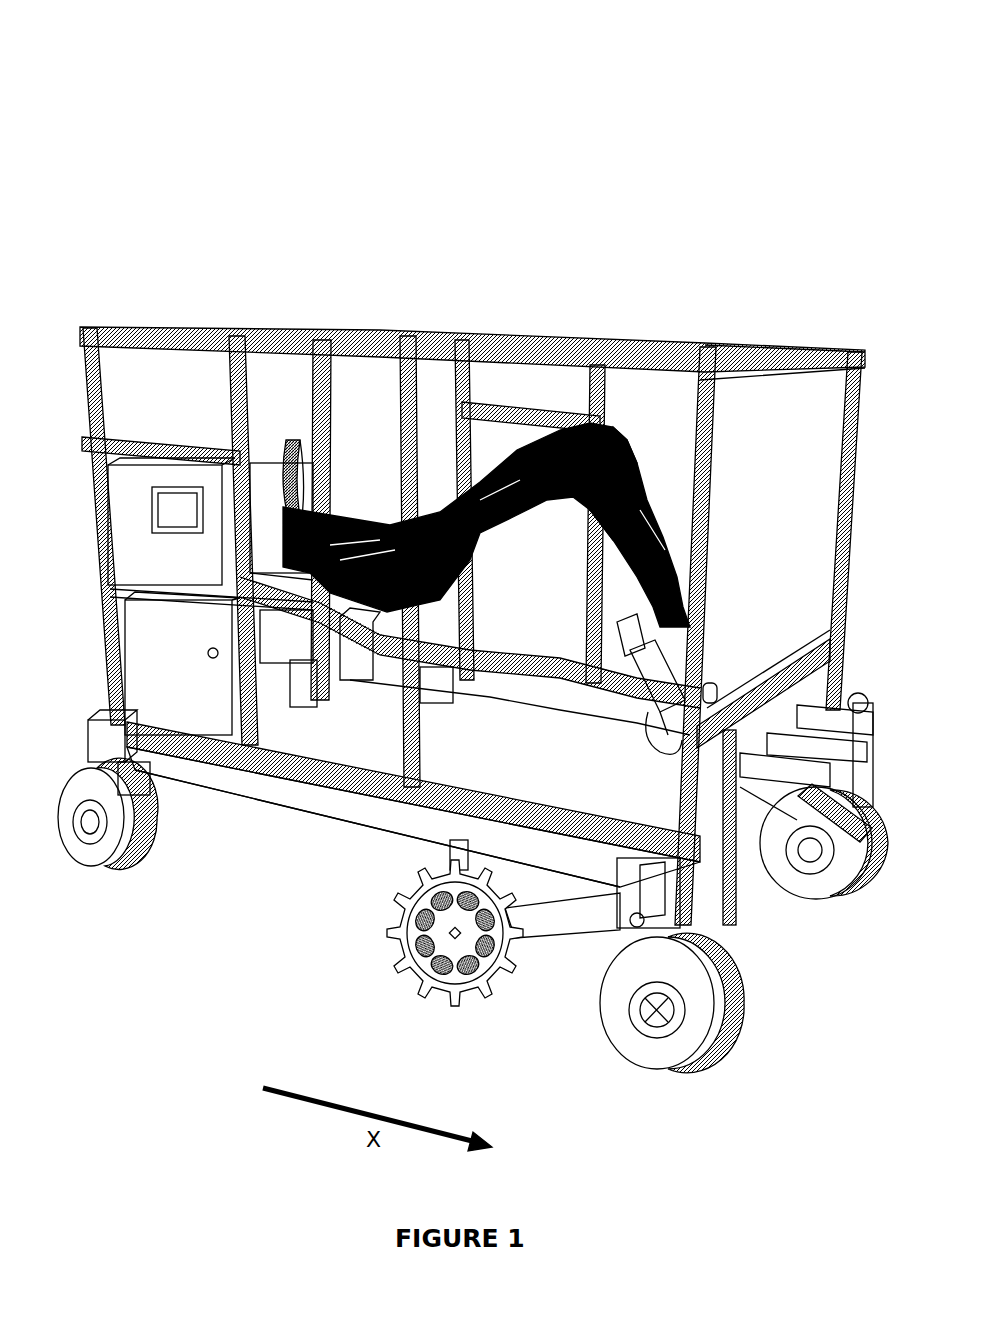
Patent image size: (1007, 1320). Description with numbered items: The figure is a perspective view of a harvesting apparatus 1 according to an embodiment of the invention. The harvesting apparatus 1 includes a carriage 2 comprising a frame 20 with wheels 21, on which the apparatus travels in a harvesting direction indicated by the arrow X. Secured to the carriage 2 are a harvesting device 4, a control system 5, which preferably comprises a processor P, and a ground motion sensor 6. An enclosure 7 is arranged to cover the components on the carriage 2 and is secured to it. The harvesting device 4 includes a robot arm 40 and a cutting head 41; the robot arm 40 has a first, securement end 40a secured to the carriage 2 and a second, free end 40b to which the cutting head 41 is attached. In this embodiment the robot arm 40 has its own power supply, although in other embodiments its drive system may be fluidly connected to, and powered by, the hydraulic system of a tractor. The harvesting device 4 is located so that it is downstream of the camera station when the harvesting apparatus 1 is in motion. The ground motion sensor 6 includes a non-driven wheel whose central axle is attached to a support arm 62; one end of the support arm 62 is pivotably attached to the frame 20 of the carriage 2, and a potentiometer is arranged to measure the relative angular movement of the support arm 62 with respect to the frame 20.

The harvesting apparatus 1 is at (828, 62).
The carriage 2 is at (152, 947).
The harvesting device 4 is at (507, 297).
The control system 5 is at (178, 497).
The ground motion sensor 6 is at (409, 999).
The enclosure 7 is at (290, 450).
The frame 20 is at (267, 790).
The wheels 21 is at (103, 863).
The robot arm 40 is at (452, 488).
The securement end 40a is at (295, 525).
The free end 40b is at (687, 607).
The cutting head 41 is at (700, 687).
The support arm 62 is at (545, 937).
The processor P is at (158, 568).